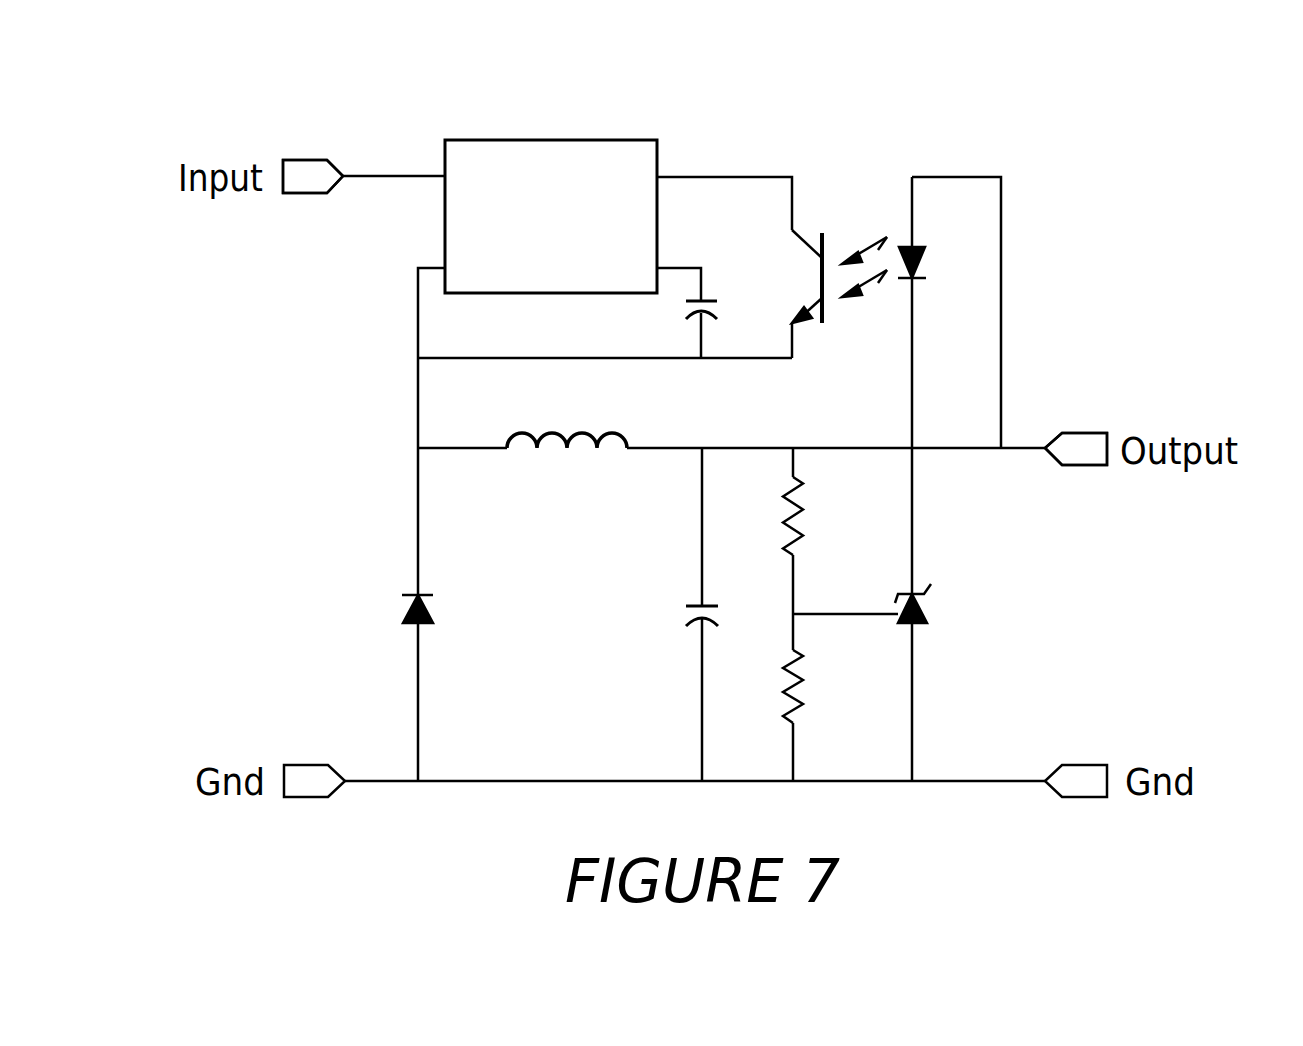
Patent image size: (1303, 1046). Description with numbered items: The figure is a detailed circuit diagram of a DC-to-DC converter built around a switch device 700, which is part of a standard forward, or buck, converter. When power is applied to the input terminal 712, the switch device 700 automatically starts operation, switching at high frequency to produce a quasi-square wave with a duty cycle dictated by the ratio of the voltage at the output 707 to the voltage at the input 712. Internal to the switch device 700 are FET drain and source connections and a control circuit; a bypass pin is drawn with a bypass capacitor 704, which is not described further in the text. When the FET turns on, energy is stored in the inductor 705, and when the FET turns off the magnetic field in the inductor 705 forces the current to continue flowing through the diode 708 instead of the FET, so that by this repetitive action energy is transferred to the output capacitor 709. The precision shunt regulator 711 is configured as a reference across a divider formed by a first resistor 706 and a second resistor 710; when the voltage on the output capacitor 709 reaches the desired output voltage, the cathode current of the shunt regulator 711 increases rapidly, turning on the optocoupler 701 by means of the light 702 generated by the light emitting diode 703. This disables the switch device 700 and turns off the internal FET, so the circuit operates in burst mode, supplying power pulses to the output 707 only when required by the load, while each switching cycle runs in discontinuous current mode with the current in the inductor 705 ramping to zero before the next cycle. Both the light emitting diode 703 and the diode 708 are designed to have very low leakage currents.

The switch device U1 700 is at (545, 140).
The optocoupler U2 701 is at (822, 232).
The light 702 is at (868, 237).
The light emitting diode D9 703 is at (917, 255).
The capacitor C2 704 is at (714, 301).
The inductor L1 705 is at (598, 450).
The resistor R5 706 is at (783, 505).
The output 707 is at (1107, 433).
The diode D8 708 is at (402, 620).
The output capacitor C4 709 is at (686, 618).
The resistor R6 710 is at (783, 675).
The precision shunt regulator U3 711 is at (927, 625).
The input terminal 712 is at (283, 160).